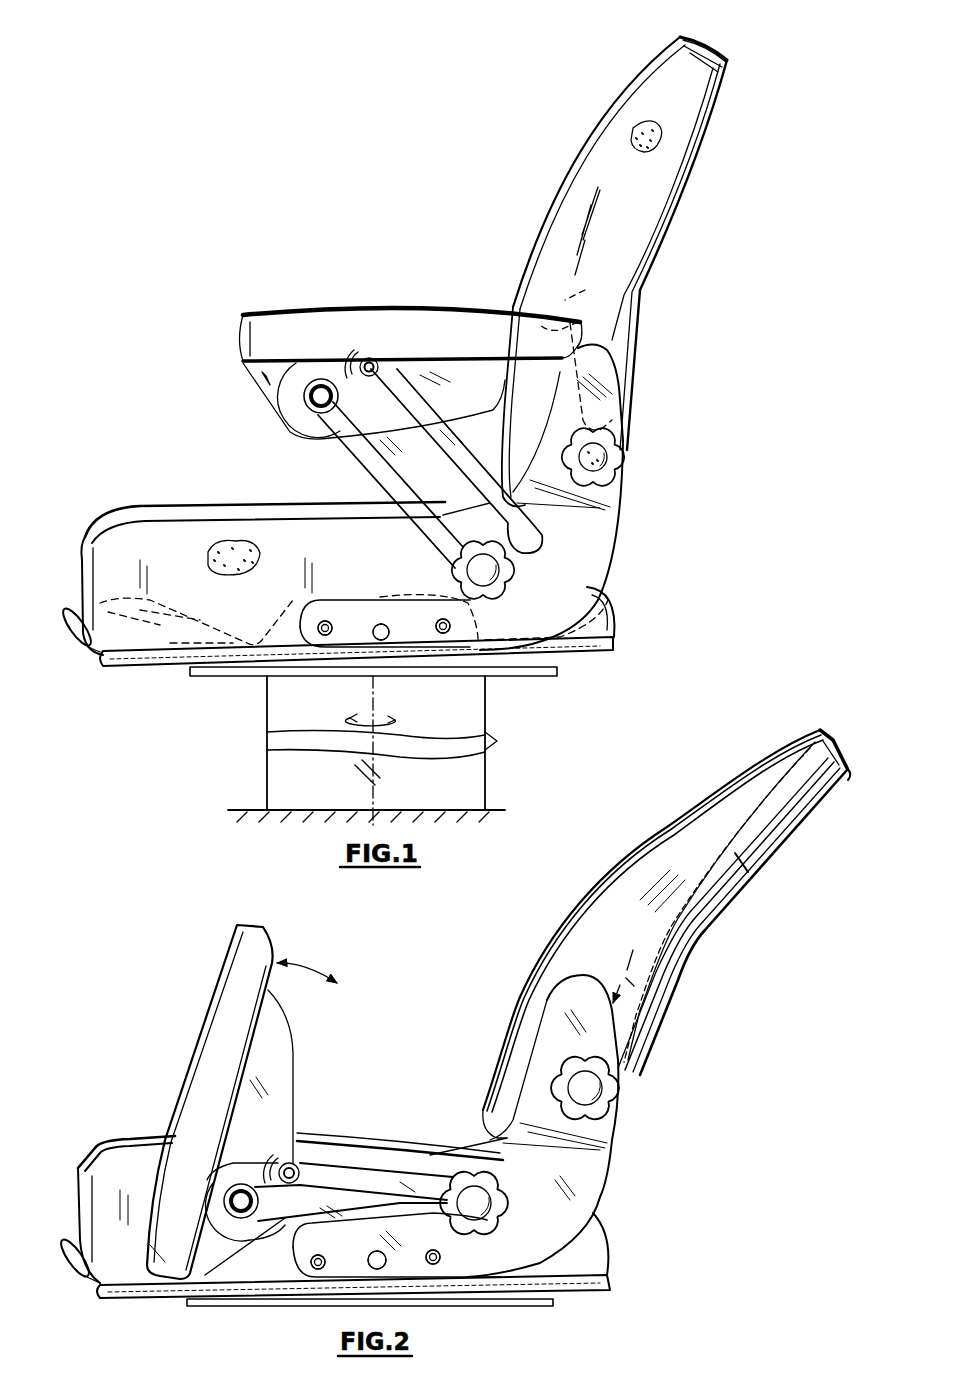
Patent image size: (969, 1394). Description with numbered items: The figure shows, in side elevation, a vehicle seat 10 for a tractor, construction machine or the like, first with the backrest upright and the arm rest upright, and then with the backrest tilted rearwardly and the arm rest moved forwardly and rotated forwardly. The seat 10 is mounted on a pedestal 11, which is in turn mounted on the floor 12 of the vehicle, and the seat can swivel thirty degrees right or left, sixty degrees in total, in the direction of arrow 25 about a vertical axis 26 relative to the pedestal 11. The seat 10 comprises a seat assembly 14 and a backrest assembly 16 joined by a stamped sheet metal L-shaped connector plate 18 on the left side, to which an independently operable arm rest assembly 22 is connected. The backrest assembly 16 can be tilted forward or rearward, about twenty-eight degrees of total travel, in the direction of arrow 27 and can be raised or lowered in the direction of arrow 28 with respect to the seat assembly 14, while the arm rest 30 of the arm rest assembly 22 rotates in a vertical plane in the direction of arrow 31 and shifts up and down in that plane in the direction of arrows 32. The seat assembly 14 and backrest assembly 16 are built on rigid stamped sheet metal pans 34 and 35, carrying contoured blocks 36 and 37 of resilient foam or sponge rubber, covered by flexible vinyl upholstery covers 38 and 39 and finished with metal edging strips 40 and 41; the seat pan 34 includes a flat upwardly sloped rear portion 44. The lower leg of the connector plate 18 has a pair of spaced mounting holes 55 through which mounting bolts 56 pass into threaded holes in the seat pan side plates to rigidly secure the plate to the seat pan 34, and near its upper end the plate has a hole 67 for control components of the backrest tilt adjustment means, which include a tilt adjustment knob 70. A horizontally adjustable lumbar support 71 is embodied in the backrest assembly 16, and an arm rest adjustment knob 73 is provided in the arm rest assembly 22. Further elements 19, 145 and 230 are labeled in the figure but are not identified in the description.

In FIG. 1, the vehicle seat 10 is at (470, 276).
In FIG. 1, the pedestal 11 is at (392, 742).
In FIG. 1, the floor 12 is at (490, 812).
In FIG. 1, the seat assembly 14 is at (240, 506).
In FIG. 2, the seat assembly 14 is at (130, 1138).
In FIG. 1, the backrest assembly 16 is at (607, 130).
In FIG. 2, the backrest assembly 16 is at (560, 925).
In FIG. 1, the connector plate 18 is at (622, 524).
In FIG. 2, the connector plate 18 is at (610, 1147).
In FIG. 1, the mounting hole 19 is at (372, 640).
In FIG. 2, the mounting hole 19 is at (373, 1270).
In FIG. 1, the arm rest assembly 22 is at (370, 468).
In FIG. 2, the arm rest assembly 22 is at (362, 1168).
In FIG. 1, the arrow 25 is at (362, 716).
In FIG. 1, the vertical axis 26 is at (380, 801).
In FIG. 2, the arrow 27 is at (705, 834).
In FIG. 2, the arrow 28 is at (630, 984).
In FIG. 1, the arm rest 30 is at (348, 311).
In FIG. 2, the arm rest 30 is at (187, 1069).
In FIG. 2, the arrow 31 is at (309, 970).
In FIG. 2, the arrows 32 is at (250, 1148).
In FIG. 1, the seat pan 34 is at (290, 618).
In FIG. 1, the backrest pan 35 is at (695, 162).
In FIG. 2, the backrest pan 35 is at (745, 893).
In FIG. 1, the block of resilient compressible material 36 is at (255, 548).
In FIG. 1, the block of resilient compressible material 37 is at (655, 131).
In FIG. 1, the exterior upholstery cover 38 is at (130, 560).
In FIG. 2, the exterior upholstery cover 38 is at (80, 1190).
In FIG. 1, the exterior upholstery cover 39 is at (585, 232).
In FIG. 2, the exterior upholstery cover 39 is at (821, 733).
In FIG. 1, the metal edging strip 40 is at (604, 652).
In FIG. 2, the metal edging strip 40 is at (603, 1281).
In FIG. 1, the metal edging strip 41 is at (716, 64).
In FIG. 2, the metal edging strip 41 is at (846, 776).
In FIG. 1, the rear portion 44 is at (609, 607).
In FIG. 1, the mounting holes 55 is at (333, 627).
In FIG. 2, the mounting holes 55 is at (322, 1259).
In FIG. 1, the mounting bolts 56 is at (323, 620).
In FIG. 2, the mounting bolts 56 is at (315, 1270).
In FIG. 1, the hole 67 is at (610, 452).
In FIG. 1, the tilt adjustment knob 70 is at (624, 474).
In FIG. 2, the tilt adjustment knob 70 is at (620, 1083).
In FIG. 1, the lumbar support 71 is at (590, 320).
In FIG. 1, the arm rest adjustment knob 73 is at (512, 575).
In FIG. 2, the arm rest adjustment knob 73 is at (510, 1207).
In FIG. 1, the mounting hole 145 is at (388, 640).
In FIG. 2, the mounting hole 145 is at (384, 1269).
In FIG. 2, the backrest frame rail 230 is at (640, 1012).